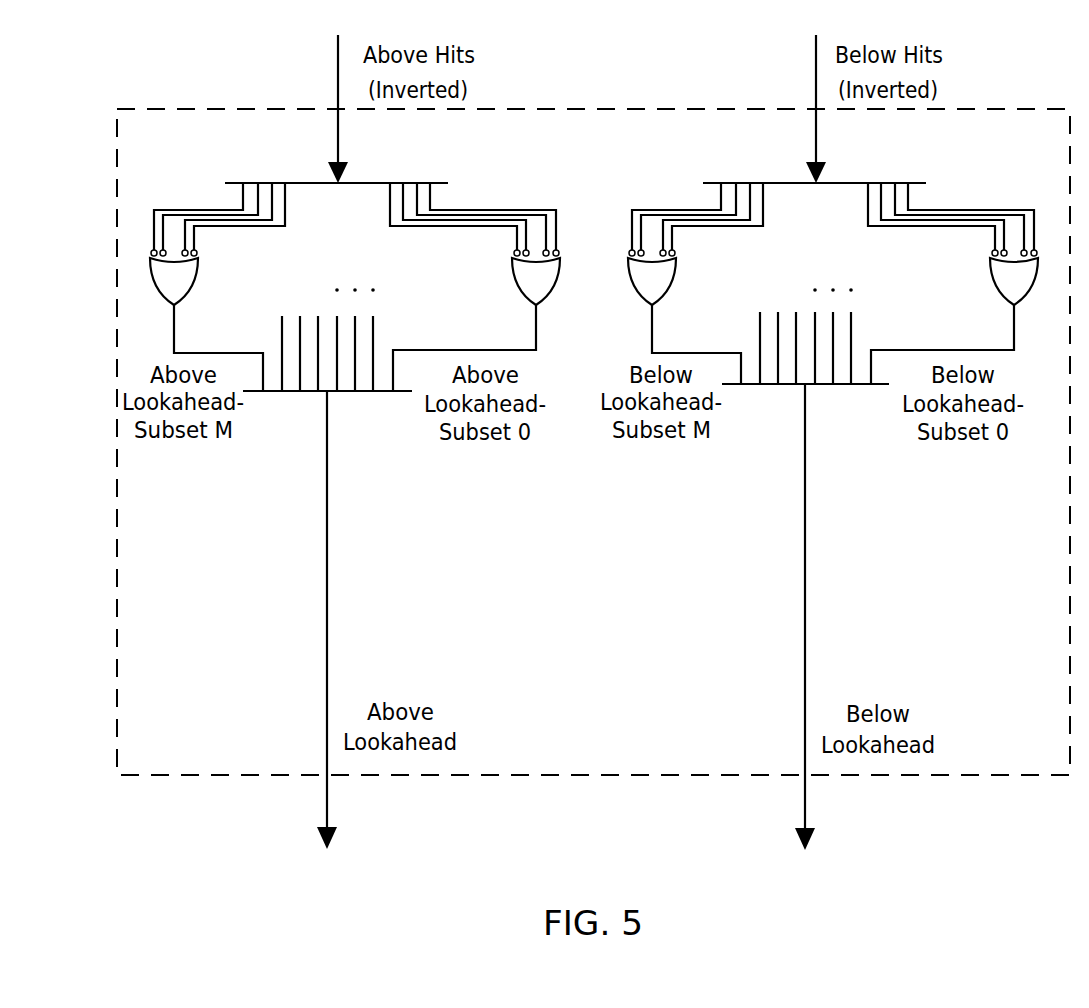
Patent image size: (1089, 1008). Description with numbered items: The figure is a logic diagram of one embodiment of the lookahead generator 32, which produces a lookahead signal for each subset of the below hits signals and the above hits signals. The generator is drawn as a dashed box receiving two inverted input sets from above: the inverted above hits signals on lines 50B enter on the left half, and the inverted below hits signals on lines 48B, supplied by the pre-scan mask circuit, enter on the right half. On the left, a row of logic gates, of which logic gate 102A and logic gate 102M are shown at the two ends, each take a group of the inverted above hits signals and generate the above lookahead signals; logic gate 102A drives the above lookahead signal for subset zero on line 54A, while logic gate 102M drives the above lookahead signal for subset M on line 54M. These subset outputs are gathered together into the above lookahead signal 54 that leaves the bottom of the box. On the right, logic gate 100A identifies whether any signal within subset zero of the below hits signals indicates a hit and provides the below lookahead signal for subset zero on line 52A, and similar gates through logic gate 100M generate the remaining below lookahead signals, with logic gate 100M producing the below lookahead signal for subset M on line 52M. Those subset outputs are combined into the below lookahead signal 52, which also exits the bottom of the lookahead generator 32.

The lookahead generator 32 is at (1010, 607).
The inverted above hits signals line 50B is at (336, 109).
The inverted below hits signals line 48B is at (814, 109).
The logic gate 102M is at (221, 244).
The logic gate 102A is at (475, 244).
The logic gate 100M is at (699, 244).
The logic gate 100A is at (953, 244).
The above lookahead signal line 54M is at (216, 340).
The above lookahead signal line 54A is at (464, 341).
The below lookahead signal line 52M is at (694, 336).
The below lookahead signal line 52A is at (942, 337).
The above lookahead signal 54 is at (296, 620).
The below lookahead signal 52 is at (775, 617).